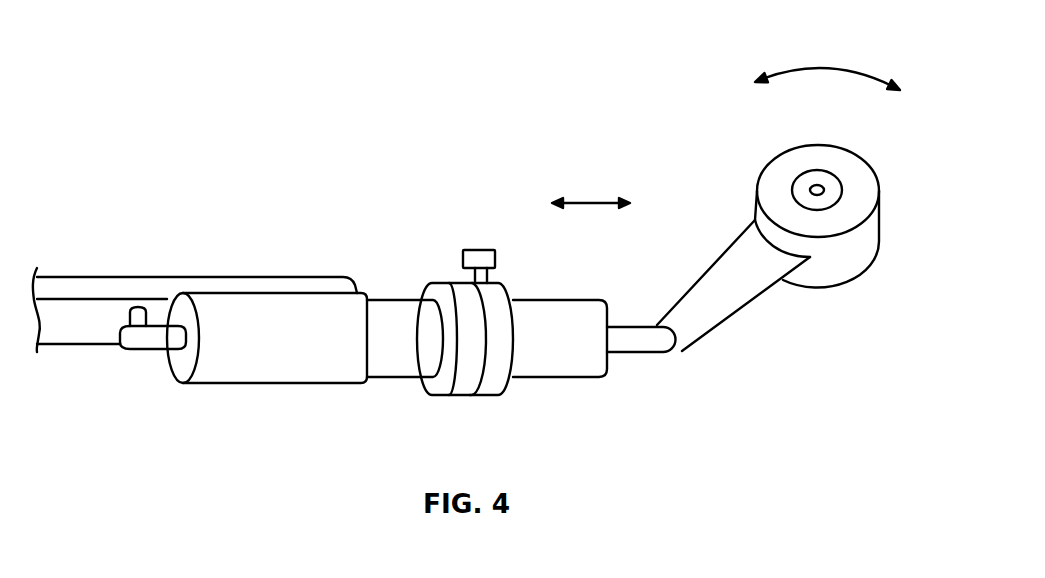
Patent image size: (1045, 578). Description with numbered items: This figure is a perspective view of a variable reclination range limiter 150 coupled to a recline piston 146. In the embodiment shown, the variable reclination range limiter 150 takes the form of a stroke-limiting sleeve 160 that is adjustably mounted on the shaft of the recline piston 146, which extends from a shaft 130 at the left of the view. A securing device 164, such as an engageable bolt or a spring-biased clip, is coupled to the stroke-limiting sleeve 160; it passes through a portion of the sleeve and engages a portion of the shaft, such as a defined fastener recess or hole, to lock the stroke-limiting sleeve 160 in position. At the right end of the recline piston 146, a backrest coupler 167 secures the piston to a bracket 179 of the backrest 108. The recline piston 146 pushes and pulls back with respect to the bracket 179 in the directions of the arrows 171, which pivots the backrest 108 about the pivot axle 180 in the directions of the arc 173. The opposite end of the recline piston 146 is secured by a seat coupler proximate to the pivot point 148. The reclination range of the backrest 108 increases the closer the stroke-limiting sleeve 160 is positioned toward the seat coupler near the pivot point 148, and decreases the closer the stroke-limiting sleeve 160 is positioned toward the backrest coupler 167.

The shaft 130 is at (125, 277).
The recline piston 146 is at (262, 364).
The variable reclination range limiter 150 is at (452, 290).
The stroke-limiting sleeve 160 is at (463, 373).
The securing device 164 is at (480, 250).
The backrest coupler 167 is at (636, 341).
The arrows 171 is at (592, 203).
The arc 173 is at (828, 70).
The backrest 108 is at (795, 147).
The pivot point 148 is at (827, 192).
The pivot axle 180 is at (818, 183).
The bracket 179 is at (728, 302).